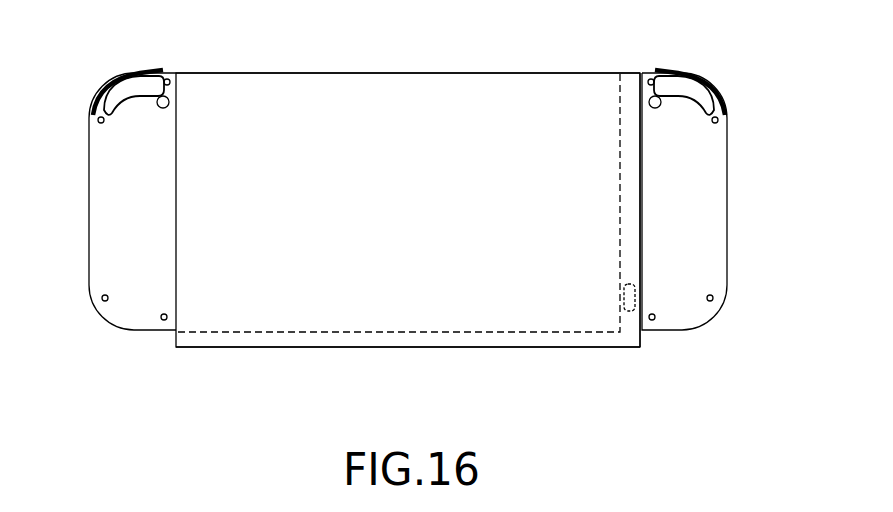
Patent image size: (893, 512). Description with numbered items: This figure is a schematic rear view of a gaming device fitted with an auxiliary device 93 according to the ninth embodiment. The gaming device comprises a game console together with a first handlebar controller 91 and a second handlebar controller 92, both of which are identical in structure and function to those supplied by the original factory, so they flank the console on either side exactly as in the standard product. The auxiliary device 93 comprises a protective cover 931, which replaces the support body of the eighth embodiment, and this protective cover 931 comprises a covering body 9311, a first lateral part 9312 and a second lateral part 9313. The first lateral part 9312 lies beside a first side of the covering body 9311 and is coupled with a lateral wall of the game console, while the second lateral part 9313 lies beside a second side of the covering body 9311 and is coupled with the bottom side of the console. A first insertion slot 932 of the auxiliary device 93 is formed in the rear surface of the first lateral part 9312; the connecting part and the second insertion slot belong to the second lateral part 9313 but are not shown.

The first handlebar controller 91 is at (107, 190).
The second handlebar controller 92 is at (708, 188).
The auxiliary device 93 is at (411, 225).
The protective cover 931 is at (452, 230).
The covering body 9311 is at (313, 83).
The first lateral part 9312 is at (630, 83).
The second lateral part 9313 is at (555, 337).
The first insertion slot 932 is at (630, 292).